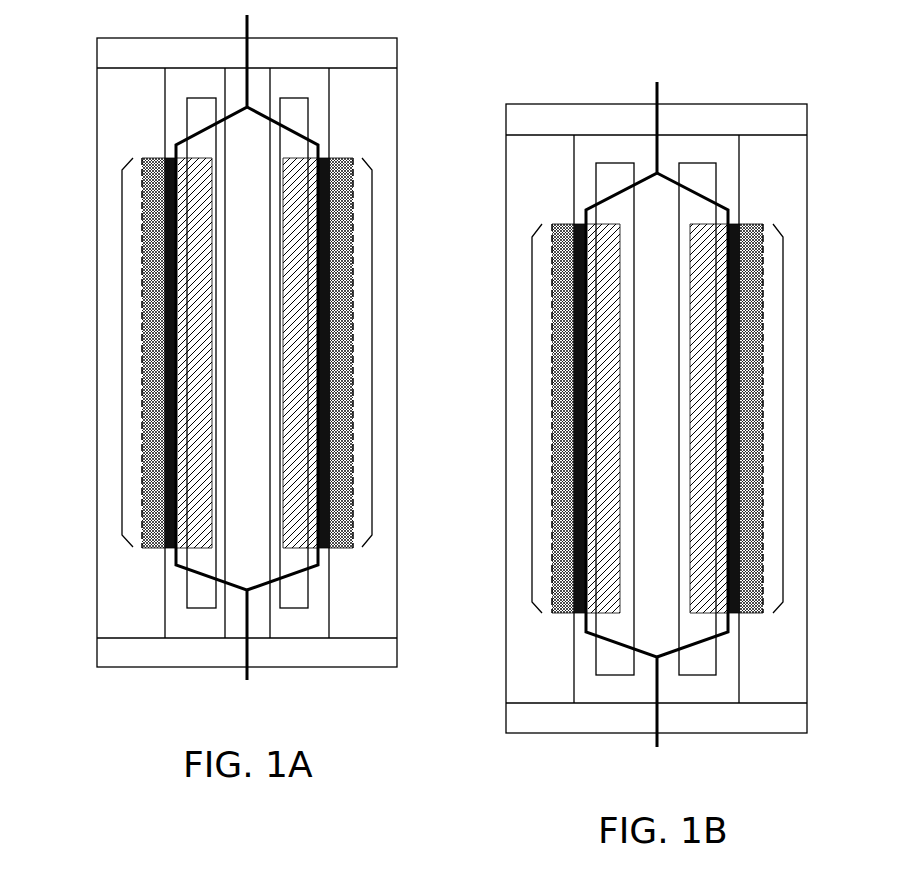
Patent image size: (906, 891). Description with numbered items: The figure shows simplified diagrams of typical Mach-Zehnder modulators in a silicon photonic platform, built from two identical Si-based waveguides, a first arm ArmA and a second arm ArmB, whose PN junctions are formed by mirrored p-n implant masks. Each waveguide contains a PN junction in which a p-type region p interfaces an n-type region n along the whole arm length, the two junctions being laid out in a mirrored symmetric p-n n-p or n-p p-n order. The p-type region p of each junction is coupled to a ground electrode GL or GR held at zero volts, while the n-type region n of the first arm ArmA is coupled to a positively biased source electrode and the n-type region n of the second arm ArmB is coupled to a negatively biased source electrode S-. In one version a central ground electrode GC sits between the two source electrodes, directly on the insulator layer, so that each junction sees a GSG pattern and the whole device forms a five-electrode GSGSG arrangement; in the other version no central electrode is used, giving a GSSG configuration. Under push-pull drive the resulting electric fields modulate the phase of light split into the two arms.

In FIG. 1A, the ground electrode GL is at (143, 353).
In FIG. 1B, the ground electrode GL is at (553, 419).
In FIG. 1A, the central electrode GC is at (247, 353).
In FIG. 1A, the ground electrode GR is at (351, 353).
In FIG. 1B, the ground electrode GR is at (759, 419).
In FIG. 1A, the source electrode S- is at (294, 353).
In FIG. 1B, the source electrode S- is at (697, 419).
In FIG. 1A, the Arm A ArmA is at (122, 353).
In FIG. 1B, the Arm A ArmA is at (532, 419).
In FIG. 1A, the Arm B ArmB is at (373, 353).
In FIG. 1B, the Arm B ArmB is at (783, 419).
In FIG. 1A, the p-type region p is at (170, 537).
In FIG. 1B, the p-type region p is at (577, 604).
In FIG. 1A, the n-type region n is at (182, 537).
In FIG. 1B, the n-type region n is at (592, 604).